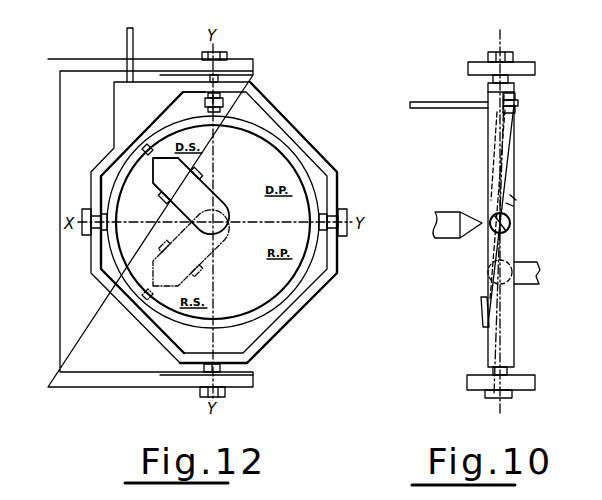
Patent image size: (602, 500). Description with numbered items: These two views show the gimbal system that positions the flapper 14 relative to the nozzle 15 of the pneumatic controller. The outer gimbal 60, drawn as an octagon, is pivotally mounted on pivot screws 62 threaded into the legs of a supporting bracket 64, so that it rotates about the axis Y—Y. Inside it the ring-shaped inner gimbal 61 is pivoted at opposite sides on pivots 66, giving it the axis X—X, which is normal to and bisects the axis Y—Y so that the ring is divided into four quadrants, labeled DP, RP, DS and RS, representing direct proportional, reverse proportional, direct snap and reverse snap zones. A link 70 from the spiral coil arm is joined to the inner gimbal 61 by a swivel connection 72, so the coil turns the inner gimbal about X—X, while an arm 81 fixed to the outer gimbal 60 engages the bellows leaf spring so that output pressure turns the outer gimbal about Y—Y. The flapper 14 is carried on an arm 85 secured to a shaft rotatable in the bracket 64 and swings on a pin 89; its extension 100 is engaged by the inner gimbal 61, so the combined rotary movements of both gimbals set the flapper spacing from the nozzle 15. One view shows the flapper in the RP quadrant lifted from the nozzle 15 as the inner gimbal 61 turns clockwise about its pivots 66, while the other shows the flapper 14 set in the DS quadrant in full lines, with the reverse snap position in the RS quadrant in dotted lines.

In FIG. 12, the flapper 14 is at (204, 196).
In FIG. 10, the flapper 14 is at (513, 203).
In FIG. 10, the nozzle 15 is at (450, 222).
In FIG. 12, the outer gimbal 60 is at (310, 143).
In FIG. 10, the outer gimbal 60 is at (518, 87).
In FIG. 12, the inner gimbal 61 is at (287, 305).
In FIG. 10, the inner gimbal 61 is at (519, 118).
In FIG. 12, the pivot screws 62 is at (220, 77).
In FIG. 10, the pivot screws 62 is at (514, 73).
In FIG. 12, the supporting bracket 64 is at (48, 86).
In FIG. 12, the pivots 66 is at (98, 232).
In FIG. 10, the pivots 66 is at (510, 230).
In FIG. 12, the link 70 is at (205, 100).
In FIG. 10, the link 70 is at (421, 102).
In FIG. 12, the swivel connection 72 is at (219, 97).
In FIG. 10, the swivel connection 72 is at (521, 102).
In FIG. 12, the arm 81 is at (128, 43).
In FIG. 10, the arm 85 is at (529, 283).
In FIG. 10, the pin 89 is at (511, 294).
In FIG. 12, the extension 100 is at (142, 151).